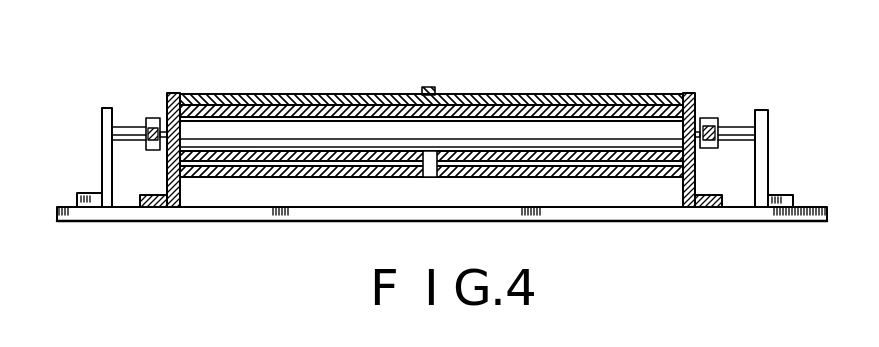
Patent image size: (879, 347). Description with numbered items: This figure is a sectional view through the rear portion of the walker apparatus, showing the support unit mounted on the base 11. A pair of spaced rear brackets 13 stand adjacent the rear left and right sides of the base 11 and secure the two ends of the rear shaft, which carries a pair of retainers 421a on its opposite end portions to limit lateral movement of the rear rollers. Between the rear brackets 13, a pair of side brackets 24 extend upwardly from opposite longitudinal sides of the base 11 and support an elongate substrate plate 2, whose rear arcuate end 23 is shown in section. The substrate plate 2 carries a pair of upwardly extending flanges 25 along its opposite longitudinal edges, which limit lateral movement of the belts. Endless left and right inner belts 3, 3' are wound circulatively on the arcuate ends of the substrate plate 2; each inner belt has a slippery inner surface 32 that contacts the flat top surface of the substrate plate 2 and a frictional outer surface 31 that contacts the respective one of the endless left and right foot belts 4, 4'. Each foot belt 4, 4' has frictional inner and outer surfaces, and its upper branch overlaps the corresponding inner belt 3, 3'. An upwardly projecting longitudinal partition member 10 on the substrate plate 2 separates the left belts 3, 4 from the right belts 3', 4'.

The substrate plate 2 is at (460, 122).
The left inner belt 3 is at (431, 79).
The right inner belt 3' is at (550, 81).
The left foot belt 4 is at (431, 73).
The right foot belt 4' is at (550, 70).
The partition member 10 is at (428, 87).
The base 11 is at (242, 207).
The rear brackets 13 is at (101, 130).
The rear arcuate end 23 is at (257, 146).
The side brackets 24 is at (695, 185).
The flanges 25 is at (172, 92).
The frictional outer surface 31 is at (604, 95).
The slippery inner surface 32 is at (634, 95).
The retainers 421a is at (150, 118).